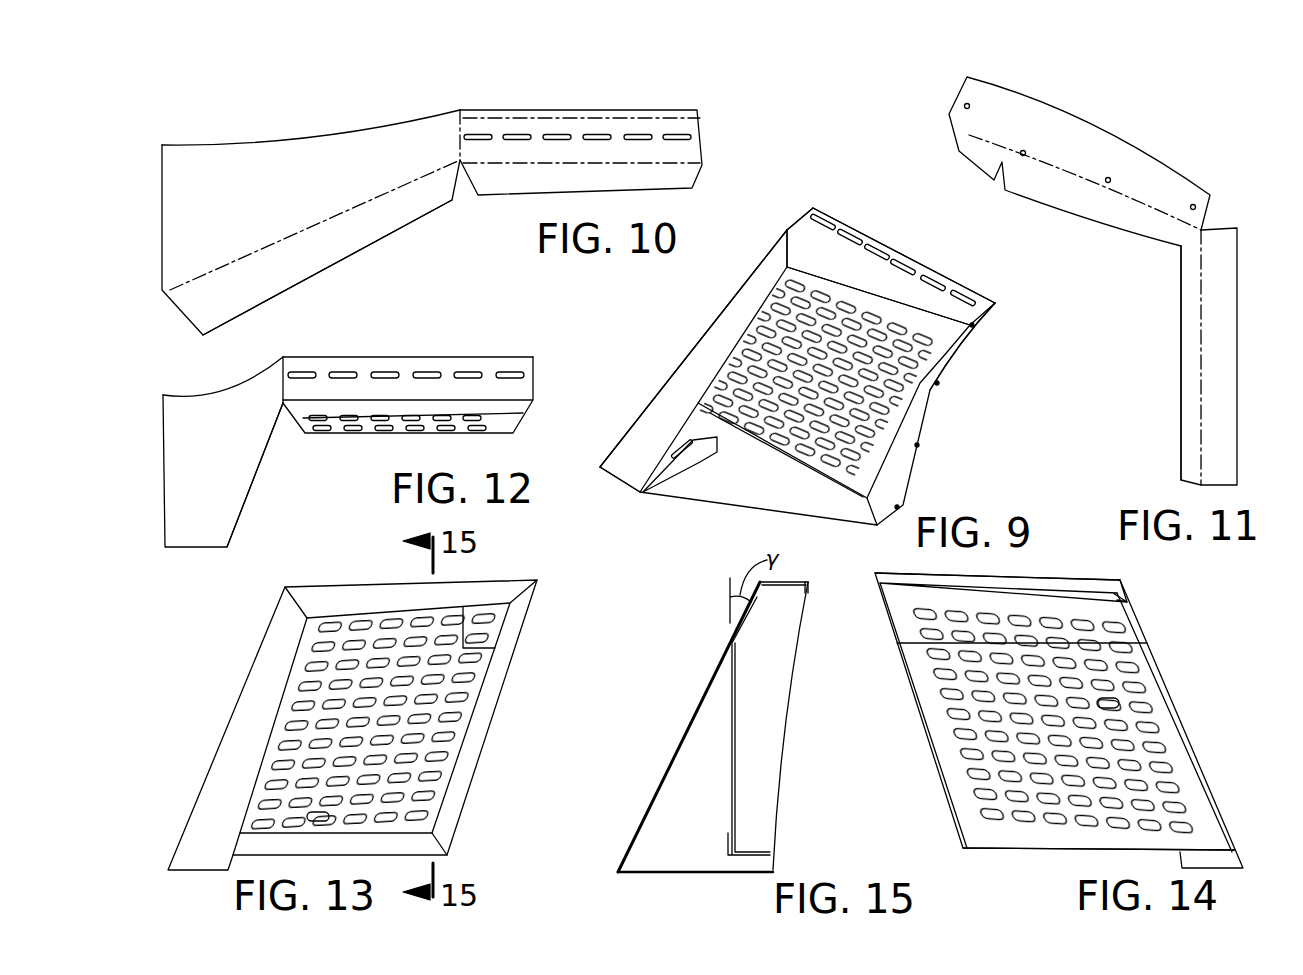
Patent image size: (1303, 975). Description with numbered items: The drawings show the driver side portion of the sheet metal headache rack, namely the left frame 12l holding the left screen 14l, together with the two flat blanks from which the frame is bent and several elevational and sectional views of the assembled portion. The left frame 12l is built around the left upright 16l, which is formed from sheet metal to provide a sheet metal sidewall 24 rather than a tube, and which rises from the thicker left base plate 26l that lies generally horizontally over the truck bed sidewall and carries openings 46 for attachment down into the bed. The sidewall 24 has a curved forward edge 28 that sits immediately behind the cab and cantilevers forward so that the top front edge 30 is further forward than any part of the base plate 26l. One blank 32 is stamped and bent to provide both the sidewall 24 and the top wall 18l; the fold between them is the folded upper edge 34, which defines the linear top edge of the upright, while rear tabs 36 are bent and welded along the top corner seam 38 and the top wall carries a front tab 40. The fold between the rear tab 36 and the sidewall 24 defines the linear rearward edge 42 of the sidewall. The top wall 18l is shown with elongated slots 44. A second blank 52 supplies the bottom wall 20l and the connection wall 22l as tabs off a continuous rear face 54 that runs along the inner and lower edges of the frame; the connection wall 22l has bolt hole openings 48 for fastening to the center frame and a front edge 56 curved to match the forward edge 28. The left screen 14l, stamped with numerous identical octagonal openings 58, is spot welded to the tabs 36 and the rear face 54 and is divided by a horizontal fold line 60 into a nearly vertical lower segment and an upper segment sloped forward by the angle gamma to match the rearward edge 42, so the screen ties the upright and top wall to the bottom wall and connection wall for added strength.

In FIG. 9, the left frame 12l is at (965, 343).
In FIG. 9, the left screen 14l is at (787, 353).
In FIG. 13, the left screen 14l is at (458, 732).
In FIG. 14, the left screen 14l is at (942, 727).
In FIG. 12, the left upright 16l is at (232, 405).
In FIG. 9, the left upright 16l is at (680, 377).
In FIG. 13, the left upright 16l is at (258, 698).
In FIG. 12, the top wall 18l is at (490, 362).
In FIG. 9, the top wall 18l is at (893, 253).
In FIG. 9, the bottom wall 20l is at (782, 460).
In FIG. 14, the bottom wall 20l is at (1003, 850).
In FIG. 9, the connection wall 22l is at (933, 408).
In FIG. 13, the connection wall 22l is at (507, 680).
In FIG. 14, the connection wall 22l is at (945, 795).
In FIG. 12, the sheet metal sidewall 24 is at (183, 410).
In FIG. 9, the left base plate 26l is at (660, 470).
In FIG. 12, the forward edge 28 is at (265, 362).
In FIG. 15, the forward edge 28 is at (785, 705).
In FIG. 9, the top front edge 30 is at (933, 267).
In FIG. 15, the top front edge 30 is at (810, 582).
In FIG. 14, the top front edge 30 is at (1030, 575).
In FIG. 10, the blank 32 is at (393, 210).
In FIG. 10, the folded upper edge 34 is at (460, 132).
In FIG. 12, the folded upper edge 34 is at (297, 370).
In FIG. 9, the folded upper edge 34 is at (797, 213).
In FIG. 14, the folded upper edge 34 is at (1123, 580).
In FIG. 10, the rear tabs 36 is at (337, 242).
In FIG. 9, the rear tabs 36 is at (855, 280).
In FIG. 9, the top corner seam 38 is at (783, 237).
In FIG. 13, the top corner seam 38 is at (300, 605).
In FIG. 10, the front tab 40 is at (602, 117).
In FIG. 15, the front tab 40 is at (805, 593).
In FIG. 14, the front tab 40 is at (922, 580).
In FIG. 10, the rearward edge 42 is at (267, 247).
In FIG. 12, the rearward edge 42 is at (235, 465).
In FIG. 9, the rearward edge 42 is at (760, 263).
In FIG. 15, the rearward edge 42 is at (668, 767).
In FIG. 10, the slots 44 is at (680, 140).
In FIG. 12, the slots 44 is at (427, 373).
In FIG. 9, the slots 44 is at (967, 297).
In FIG. 9, the openings 46 is at (683, 460).
In FIG. 9, the bolt hole openings 48 is at (897, 503).
In FIG. 11, the bolt hole openings 48 is at (1108, 183).
In FIG. 11, the blank 52 is at (1189, 393).
In FIG. 9, the continuous rear face 54 is at (830, 488).
In FIG. 11, the continuous rear face 54 is at (1189, 336).
In FIG. 13, the continuous rear face 54 is at (458, 782).
In FIG. 9, the front edge 56 is at (967, 373).
In FIG. 11, the front edge 56 is at (1034, 118).
In FIG. 13, the openings 58 is at (318, 823).
In FIG. 14, the openings 58 is at (1108, 703).
In FIG. 9, the horizontal fold line 60 is at (973, 325).
In FIG. 13, the horizontal fold line 60 is at (463, 620).